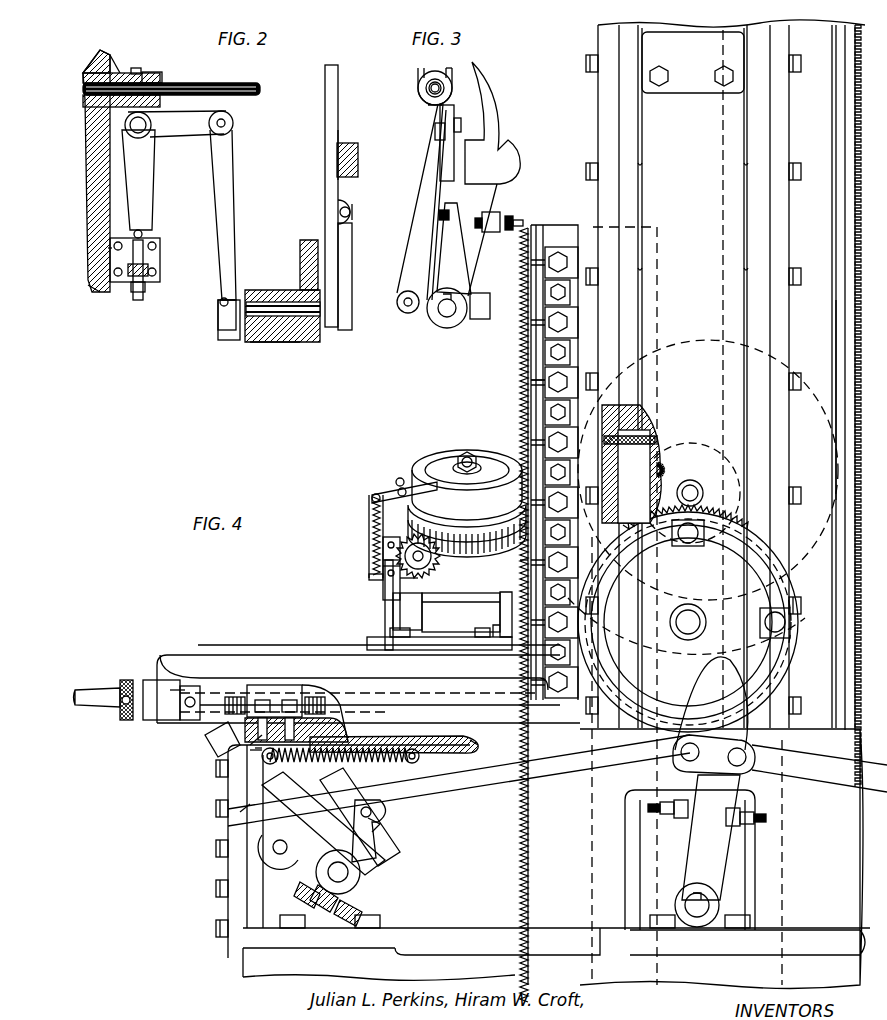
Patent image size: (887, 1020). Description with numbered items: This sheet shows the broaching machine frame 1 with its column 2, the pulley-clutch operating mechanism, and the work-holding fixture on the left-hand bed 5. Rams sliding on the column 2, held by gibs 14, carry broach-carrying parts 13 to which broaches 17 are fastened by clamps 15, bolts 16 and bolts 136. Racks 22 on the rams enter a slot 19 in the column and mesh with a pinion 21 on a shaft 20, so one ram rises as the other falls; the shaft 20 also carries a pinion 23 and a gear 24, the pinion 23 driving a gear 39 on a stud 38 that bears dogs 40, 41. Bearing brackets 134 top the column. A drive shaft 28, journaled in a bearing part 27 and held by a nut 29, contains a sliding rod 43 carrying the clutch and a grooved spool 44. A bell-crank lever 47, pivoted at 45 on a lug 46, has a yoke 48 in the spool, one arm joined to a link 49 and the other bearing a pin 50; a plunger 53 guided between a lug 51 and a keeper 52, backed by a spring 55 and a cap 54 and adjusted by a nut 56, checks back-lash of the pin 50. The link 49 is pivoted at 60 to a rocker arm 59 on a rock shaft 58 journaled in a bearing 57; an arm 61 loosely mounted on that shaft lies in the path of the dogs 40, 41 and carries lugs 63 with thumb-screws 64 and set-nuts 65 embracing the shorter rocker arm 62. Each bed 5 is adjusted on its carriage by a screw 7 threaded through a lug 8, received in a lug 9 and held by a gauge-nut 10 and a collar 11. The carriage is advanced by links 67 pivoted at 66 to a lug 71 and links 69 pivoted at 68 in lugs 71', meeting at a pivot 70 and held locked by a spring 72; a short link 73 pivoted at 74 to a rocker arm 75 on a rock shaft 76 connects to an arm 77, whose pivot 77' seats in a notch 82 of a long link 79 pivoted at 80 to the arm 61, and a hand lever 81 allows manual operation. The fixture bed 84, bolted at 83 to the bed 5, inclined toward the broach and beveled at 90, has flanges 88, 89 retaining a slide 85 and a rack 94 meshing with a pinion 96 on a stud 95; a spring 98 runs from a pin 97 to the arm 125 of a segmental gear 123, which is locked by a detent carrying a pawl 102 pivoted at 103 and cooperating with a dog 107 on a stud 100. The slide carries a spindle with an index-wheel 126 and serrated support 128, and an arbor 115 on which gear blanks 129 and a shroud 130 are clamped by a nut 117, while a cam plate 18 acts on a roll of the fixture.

In FIG. 2, the frame 1 is at (96, 188).
In FIG. 4, the frame 1 is at (232, 872).
In FIG. 4, the column 2 is at (710, 379).
In FIG. 4, the bed 5 is at (232, 650).
In FIG. 4, the horizontal screw 7 is at (214, 738).
In FIG. 4, the lug 8 is at (266, 688).
In FIG. 4, the lug 9 is at (317, 700).
In FIG. 4, the gauge-nut 10 is at (128, 718).
In FIG. 4, the collar 11 is at (176, 714).
In FIG. 4, the broach-carrying part 13 is at (580, 216).
In FIG. 4, the gibs 14 is at (602, 116).
In FIG. 4, the clamps 15 is at (566, 392).
In FIG. 4, the bolts 16 is at (546, 382).
In FIG. 4, the broaches 17 is at (856, 386).
In FIG. 4, the cam plate 18 is at (842, 432).
In FIG. 4, the slot 19 is at (662, 432).
In FIG. 4, the shaft 20 is at (692, 484).
In FIG. 4, the pinion 21 is at (668, 474).
In FIG. 4, the racks 22 is at (630, 588).
In FIG. 4, the pinion 23 is at (702, 496).
In FIG. 4, the gear 24 is at (786, 392).
In FIG. 2, the bearing part 27 is at (112, 60).
In FIG. 2, the shaft 28 is at (96, 60).
In FIG. 2, the nut 29 is at (128, 68).
In FIG. 4, the stud 38 is at (690, 630).
In FIG. 4, the gear 39 is at (688, 622).
In FIG. 4, the dog 40 is at (683, 546).
In FIG. 4, the dog 41 is at (760, 620).
In FIG. 2, the rod 43 is at (228, 88).
In FIG. 3, the rod 43 is at (433, 78).
In FIG. 2, the spool 44 is at (162, 74).
In FIG. 3, the spool 44 is at (420, 84).
In FIG. 2, the pivot 45 is at (146, 130).
In FIG. 2, the lug 46 is at (100, 150).
In FIG. 3, the lug 46 is at (480, 112).
In FIG. 2, the bell-crank lever 47 is at (146, 160).
In FIG. 3, the bell-crank lever 47 is at (442, 120).
In FIG. 2, the yoke 48 is at (140, 72).
In FIG. 3, the yoke 48 is at (452, 72).
In FIG. 2, the link 49 is at (226, 185).
In FIG. 3, the link 49 is at (434, 192).
In FIG. 2, the pin 50 is at (144, 236).
In FIG. 2, the lug 51 is at (98, 280).
In FIG. 2, the keeper 52 is at (146, 258).
In FIG. 2, the plunger 53 is at (154, 250).
In FIG. 2, the cap 54 is at (148, 276).
In FIG. 2, the spring 55 is at (112, 250).
In FIG. 2, the nut 56 is at (142, 288).
In FIG. 2, the bearing 57 is at (268, 330).
In FIG. 2, the rock shaft 58 is at (268, 300).
In FIG. 4, the rock shaft 58 is at (698, 912).
In FIG. 2, the rocker arm 59 is at (232, 326).
In FIG. 3, the rocker arm 59 is at (440, 320).
In FIG. 2, the pivot 60 is at (222, 305).
In FIG. 3, the pivot 60 is at (404, 308).
In FIG. 2, the arm 61 is at (334, 200).
In FIG. 4, the arm 61 is at (690, 855).
In FIG. 2, the rocker arm 62 is at (344, 268).
In FIG. 3, the rocker arm 62 is at (462, 272).
In FIG. 4, the rocker arm 62 is at (698, 852).
In FIG. 2, the lugs 63 is at (354, 206).
In FIG. 3, the lugs 63 is at (439, 214).
In FIG. 4, the lugs 63 is at (678, 818).
In FIG. 2, the thumb-screws 64 is at (340, 212).
In FIG. 3, the thumb-screws 64 is at (440, 222).
In FIG. 4, the thumb-screws 64 is at (648, 808).
In FIG. 3, the set-nuts 65 is at (492, 212).
In FIG. 4, the set-nuts 65 is at (672, 802).
In FIG. 4, the pivot 66 is at (262, 752).
In FIG. 4, the links 67 is at (285, 762).
In FIG. 4, the pivot 68 is at (424, 764).
In FIG. 4, the links 69 is at (414, 766).
In FIG. 4, the pivot 70 is at (372, 760).
In FIG. 4, the lug 71 is at (268, 686).
In FIG. 4, the lugs 71' is at (492, 782).
In FIG. 4, the spring 72 is at (248, 810).
In FIG. 4, the short link 73 is at (359, 817).
In FIG. 4, the pivot 74 is at (272, 847).
In FIG. 4, the rocker arm 75 is at (310, 884).
In FIG. 4, the rock shaft 76 is at (350, 874).
In FIG. 4, the rocker arm 77 is at (388, 836).
In FIG. 4, the pivot 77' is at (389, 820).
In FIG. 2, the long link 79 is at (346, 142).
In FIG. 4, the long link 79 is at (557, 780).
In FIG. 2, the pivot 80 is at (336, 158).
In FIG. 4, the pivot 80 is at (733, 750).
In FIG. 4, the hand lever 81 is at (240, 742).
In FIG. 4, the notch 82 is at (378, 824).
In FIG. 4, the bolts 83 is at (482, 650).
In FIG. 4, the bed 84 is at (421, 614).
In FIG. 4, the slide 85 is at (461, 596).
In FIG. 4, the flange 88 is at (506, 628).
In FIG. 4, the flange 89 is at (392, 622).
In FIG. 4, the bevel 90 is at (524, 566).
In FIG. 4, the rack 94 is at (405, 556).
In FIG. 4, the stud 95 is at (384, 560).
In FIG. 4, the pinion 96 is at (400, 582).
In FIG. 4, the pin 97 is at (370, 577).
In FIG. 4, the spring 98 is at (372, 528).
In FIG. 4, the stud 100 is at (390, 498).
In FIG. 4, the pawl 102 is at (402, 478).
In FIG. 4, the pivot 103 is at (400, 486).
In FIG. 4, the dog 107 is at (396, 484).
In FIG. 4, the arbor 115 is at (467, 452).
In FIG. 4, the nut 117 is at (462, 460).
In FIG. 4, the segmental gear 123 is at (384, 566).
In FIG. 4, the arm 125 is at (392, 540).
In FIG. 4, the index-wheel 126 is at (388, 546).
In FIG. 4, the serrated support 128 is at (432, 518).
In FIG. 4, the gear blanks 129 is at (492, 520).
In FIG. 4, the shroud 130 is at (474, 530).
In FIG. 4, the bearing brackets 134 is at (693, 62).
In FIG. 4, the bolts 136 is at (530, 280).